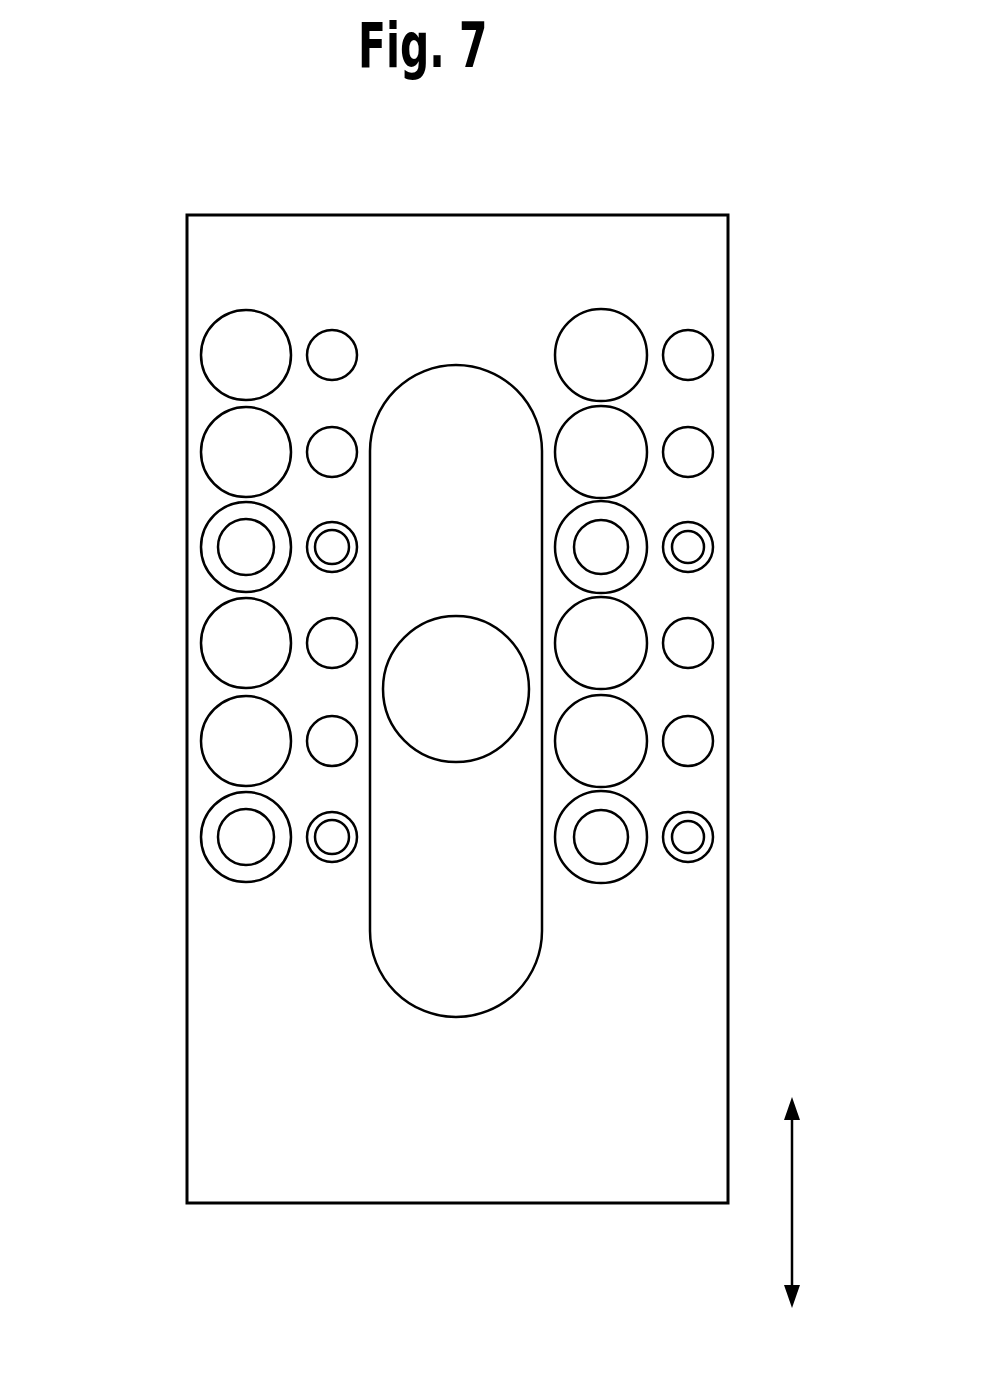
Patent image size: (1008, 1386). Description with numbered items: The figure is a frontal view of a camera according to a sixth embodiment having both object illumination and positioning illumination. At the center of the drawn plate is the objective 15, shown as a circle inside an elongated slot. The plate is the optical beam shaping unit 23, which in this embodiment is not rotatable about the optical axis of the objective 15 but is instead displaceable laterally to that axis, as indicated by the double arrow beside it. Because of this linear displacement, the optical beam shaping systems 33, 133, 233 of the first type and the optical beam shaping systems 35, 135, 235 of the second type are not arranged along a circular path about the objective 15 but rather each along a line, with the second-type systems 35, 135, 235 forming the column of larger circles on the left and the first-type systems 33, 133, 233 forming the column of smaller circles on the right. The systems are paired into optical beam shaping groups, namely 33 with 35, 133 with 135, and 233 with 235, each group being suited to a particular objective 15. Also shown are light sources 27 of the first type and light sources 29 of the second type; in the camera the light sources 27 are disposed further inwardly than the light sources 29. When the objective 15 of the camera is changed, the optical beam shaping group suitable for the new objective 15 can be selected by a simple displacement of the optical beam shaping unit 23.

The optical beam shaping unit 23 is at (818, 142).
The objective 15 is at (475, 707).
The optical beam shaping system of the second type 235 is at (222, 643).
The optical beam shaping system of the second type 135 is at (218, 746).
The optical beam shaping system of the second type 35 is at (210, 820).
The light source of the second type 29 is at (133, 878).
The optical beam shaping system of the first type 233 is at (790, 677).
The optical beam shaping system of the first type 133 is at (790, 770).
The optical beam shaping system of the first type 33 is at (778, 913).
The light source of the first type 27 is at (790, 813).